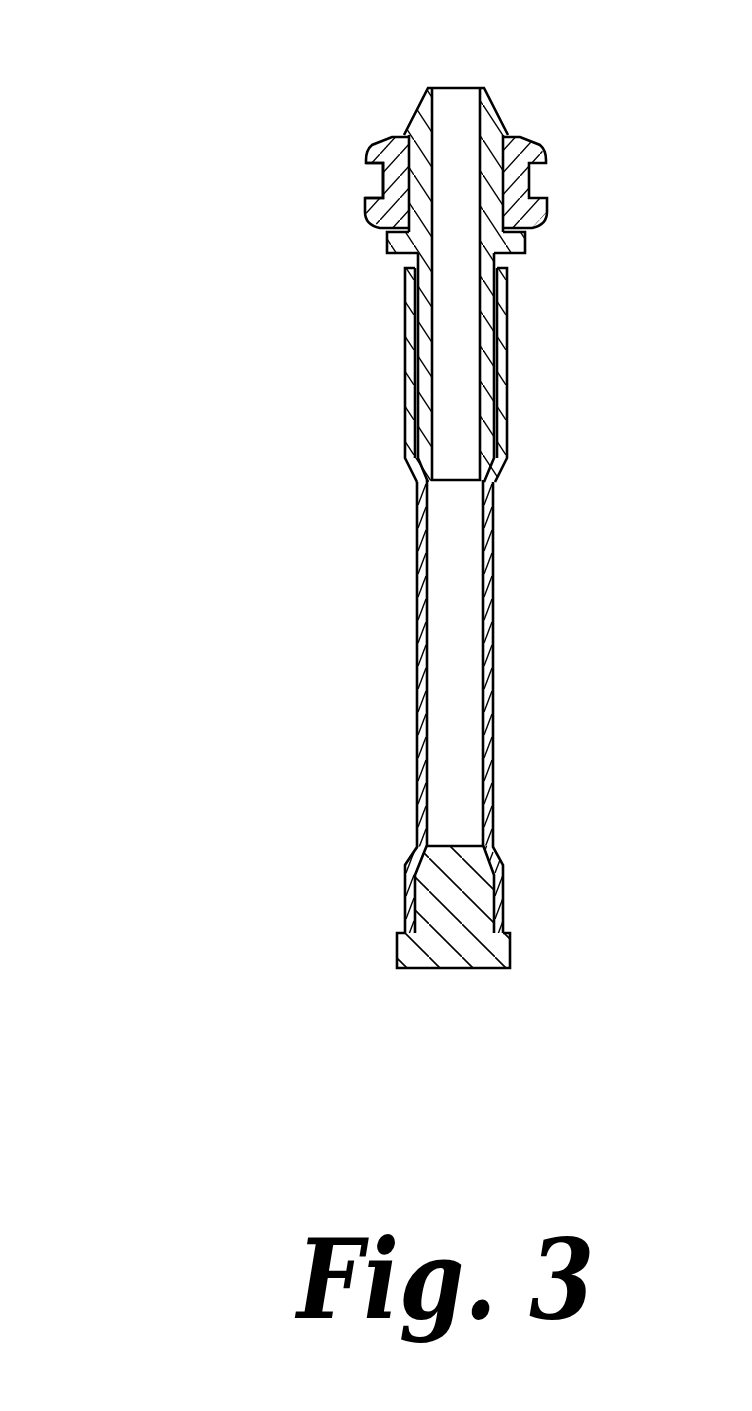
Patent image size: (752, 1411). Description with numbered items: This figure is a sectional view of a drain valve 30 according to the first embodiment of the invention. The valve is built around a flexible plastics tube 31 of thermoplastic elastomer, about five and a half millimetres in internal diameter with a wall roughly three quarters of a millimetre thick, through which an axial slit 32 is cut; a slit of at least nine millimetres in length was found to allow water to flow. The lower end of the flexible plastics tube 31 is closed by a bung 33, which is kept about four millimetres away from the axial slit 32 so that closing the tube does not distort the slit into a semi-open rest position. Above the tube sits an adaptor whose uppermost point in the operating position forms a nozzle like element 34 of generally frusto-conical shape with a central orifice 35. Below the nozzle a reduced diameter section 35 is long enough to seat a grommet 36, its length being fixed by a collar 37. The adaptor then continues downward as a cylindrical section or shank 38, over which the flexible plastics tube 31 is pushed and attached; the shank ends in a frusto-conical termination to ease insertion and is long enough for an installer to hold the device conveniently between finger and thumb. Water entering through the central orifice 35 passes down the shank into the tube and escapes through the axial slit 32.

The drain valve 30 is at (282, 418).
The flexible plastics tube 31 is at (490, 640).
The axial slit 32 is at (533, 695).
The bung 33 is at (507, 953).
The nozzle like element 34 is at (527, 243).
The central orifice / reduced diameter section 35 is at (487, 88).
The grommet 36 is at (550, 163).
The collar 37 is at (395, 142).
The cylindrical section or shank 38 is at (403, 343).